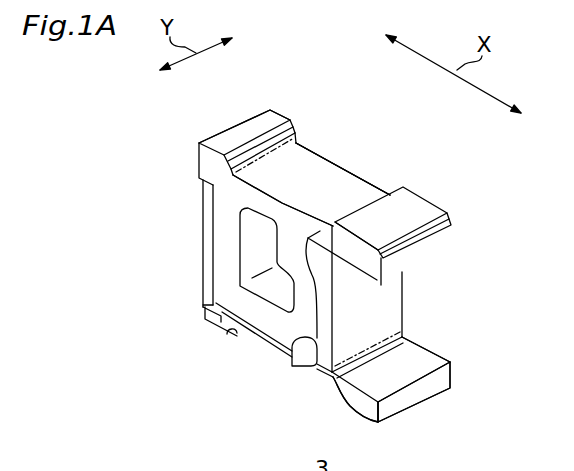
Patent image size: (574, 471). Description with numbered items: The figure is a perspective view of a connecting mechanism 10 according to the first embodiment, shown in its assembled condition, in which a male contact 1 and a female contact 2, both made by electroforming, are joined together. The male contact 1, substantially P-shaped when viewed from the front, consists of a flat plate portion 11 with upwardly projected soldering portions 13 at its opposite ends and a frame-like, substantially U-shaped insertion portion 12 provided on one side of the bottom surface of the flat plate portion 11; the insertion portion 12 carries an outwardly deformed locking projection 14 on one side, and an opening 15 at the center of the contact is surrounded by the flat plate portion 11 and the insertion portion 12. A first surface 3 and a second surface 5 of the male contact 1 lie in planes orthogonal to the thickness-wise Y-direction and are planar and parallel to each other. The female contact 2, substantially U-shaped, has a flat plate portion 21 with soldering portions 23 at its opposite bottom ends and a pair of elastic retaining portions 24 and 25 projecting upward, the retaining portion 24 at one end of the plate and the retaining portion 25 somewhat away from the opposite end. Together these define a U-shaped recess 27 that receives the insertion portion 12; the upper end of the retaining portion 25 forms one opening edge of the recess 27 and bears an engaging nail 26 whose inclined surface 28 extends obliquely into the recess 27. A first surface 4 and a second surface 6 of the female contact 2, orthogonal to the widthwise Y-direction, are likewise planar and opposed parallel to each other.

The first contact 1 is at (311, 143).
The second contact 2 is at (444, 360).
The first surface 3 is at (291, 119).
The first surface 4 is at (432, 352).
The second surface 5 is at (203, 164).
The second surface 6 is at (356, 408).
The connecting mechanism 10 is at (385, 164).
The flat plate portion 11 is at (338, 165).
The insertion portion 12 is at (237, 254).
The soldering portions 13 is at (247, 126).
The locking projection 14 is at (292, 362).
The opening 15 is at (257, 263).
The flat plate portion 21 is at (272, 348).
The soldering portions 23 is at (212, 323).
The elastic retaining portion 24 is at (208, 202).
The elastic retaining portion 25 is at (392, 315).
The engaging nail 26 is at (320, 268).
The recess 27 is at (211, 306).
The inclined surface 28 is at (328, 234).